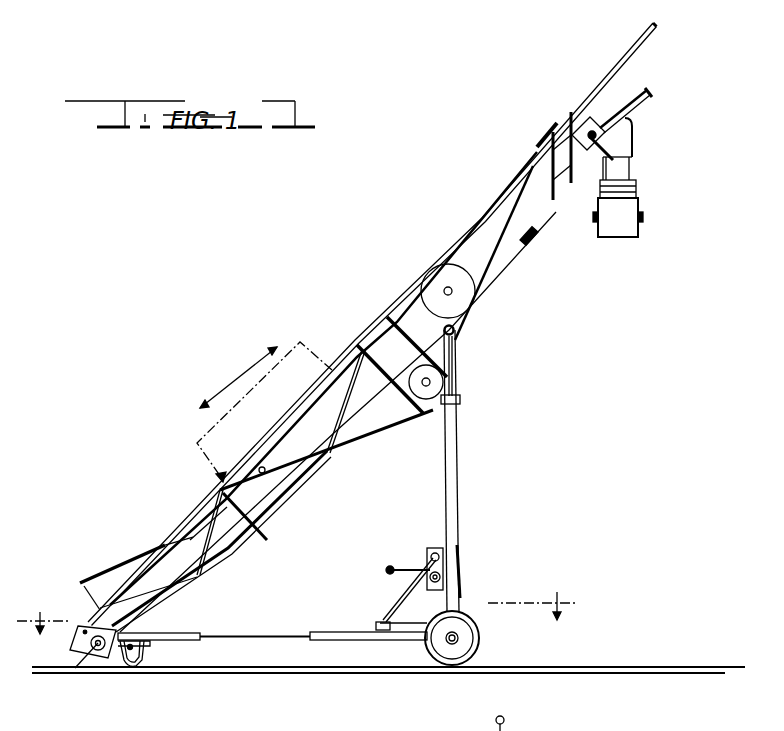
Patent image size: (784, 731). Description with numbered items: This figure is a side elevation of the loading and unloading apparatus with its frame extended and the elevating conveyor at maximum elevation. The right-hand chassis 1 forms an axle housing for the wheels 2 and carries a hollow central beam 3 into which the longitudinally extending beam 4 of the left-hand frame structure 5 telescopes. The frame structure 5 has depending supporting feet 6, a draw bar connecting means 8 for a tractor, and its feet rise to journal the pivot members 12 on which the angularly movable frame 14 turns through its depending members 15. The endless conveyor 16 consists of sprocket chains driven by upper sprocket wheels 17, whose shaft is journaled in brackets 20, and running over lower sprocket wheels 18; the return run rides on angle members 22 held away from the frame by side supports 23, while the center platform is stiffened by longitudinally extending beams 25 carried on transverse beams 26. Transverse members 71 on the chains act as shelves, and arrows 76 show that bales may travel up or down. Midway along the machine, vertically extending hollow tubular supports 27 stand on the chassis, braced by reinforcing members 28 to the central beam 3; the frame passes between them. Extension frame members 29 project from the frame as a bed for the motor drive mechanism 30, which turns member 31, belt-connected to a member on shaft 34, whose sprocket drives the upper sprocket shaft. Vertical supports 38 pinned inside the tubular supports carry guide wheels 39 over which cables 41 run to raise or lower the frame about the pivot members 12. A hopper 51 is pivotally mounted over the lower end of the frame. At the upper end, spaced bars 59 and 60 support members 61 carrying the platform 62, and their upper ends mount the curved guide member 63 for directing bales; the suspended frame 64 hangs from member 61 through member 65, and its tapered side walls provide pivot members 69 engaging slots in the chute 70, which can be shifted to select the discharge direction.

The chassis 1 is at (424, 645).
The wheels 2 is at (481, 640).
The central beam 3 is at (345, 640).
The longitudinally extending beam 4 is at (262, 642).
The frame structure 5 is at (197, 642).
The supporting feet 6 is at (130, 655).
The central connecting means 8 is at (122, 668).
The pivot members 12 is at (100, 655).
The angularly movable frame 14 is at (483, 219).
The depending members 15 is at (305, 330).
The endless conveyor 16 is at (553, 218).
The sprocket wheels 17 is at (600, 125).
The sprocket wheels 18 is at (92, 652).
The brackets 20 is at (320, 610).
The angle members 22 is at (232, 552).
The side supports 23 is at (517, 258).
The longitudinally extending beams 25 is at (261, 467).
The transverse beams 26 is at (302, 468).
The vertically extending hollow tubular supports 27 is at (462, 492).
The reinforcing members 28 is at (446, 560).
The extension frame members 29 is at (395, 316).
The motor drive mechanism 30 is at (461, 400).
The member 31 is at (463, 380).
The shaft 34 is at (453, 292).
The vertical supports 38 is at (462, 338).
The guide wheels 39 is at (455, 330).
The cables 41 is at (433, 467).
The hopper 51 is at (128, 570).
The bar 59 is at (540, 142).
The bar 60 is at (566, 118).
The members 61 is at (651, 99).
The platform 62 is at (621, 101).
The guide member 63 is at (635, 47).
The suspended frame 64 is at (640, 162).
The member 65 is at (637, 130).
The pivot members 69 is at (643, 218).
The chute 70 is at (637, 242).
The transverse members 71 is at (216, 489).
The arrows 76 is at (242, 376).